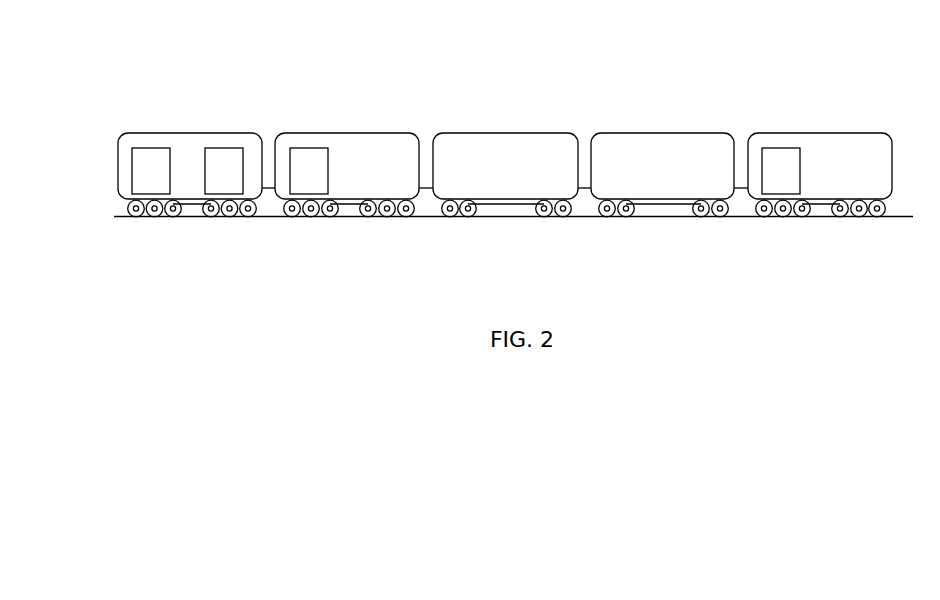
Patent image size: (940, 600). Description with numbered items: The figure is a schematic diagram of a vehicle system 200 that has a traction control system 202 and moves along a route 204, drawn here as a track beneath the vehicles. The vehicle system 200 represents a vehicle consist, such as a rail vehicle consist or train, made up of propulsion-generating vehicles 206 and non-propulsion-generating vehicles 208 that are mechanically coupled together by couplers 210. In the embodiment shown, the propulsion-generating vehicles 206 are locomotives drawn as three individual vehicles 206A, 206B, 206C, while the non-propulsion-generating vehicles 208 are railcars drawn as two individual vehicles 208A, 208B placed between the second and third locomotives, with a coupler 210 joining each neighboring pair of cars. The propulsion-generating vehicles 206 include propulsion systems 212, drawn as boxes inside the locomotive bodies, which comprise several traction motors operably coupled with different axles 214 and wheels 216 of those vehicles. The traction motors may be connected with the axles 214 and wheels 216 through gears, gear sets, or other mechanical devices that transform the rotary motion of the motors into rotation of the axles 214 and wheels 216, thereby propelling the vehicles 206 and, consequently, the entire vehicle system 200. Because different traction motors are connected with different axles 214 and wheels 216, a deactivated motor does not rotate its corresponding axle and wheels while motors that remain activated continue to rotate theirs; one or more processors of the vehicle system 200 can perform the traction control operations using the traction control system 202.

The vehicle system 200 is at (118, 243).
The traction control system 202 is at (152, 148).
The route 204 is at (900, 218).
The propulsion-generating vehicles 206 is at (187, 158).
The propulsion-generating vehicle 206A is at (193, 165).
The propulsion-generating vehicle 206B is at (347, 133).
The propulsion-generating vehicle 206C is at (818, 133).
The non-propulsion-generating vehicles 208 is at (505, 144).
The non-propulsion-generating vehicle 208A is at (503, 133).
The non-propulsion-generating vehicle 208B is at (661, 133).
The couplers 210 is at (426, 196).
The propulsion systems 212 is at (225, 148).
The axles 214 is at (212, 211).
The wheels 216 is at (260, 213).